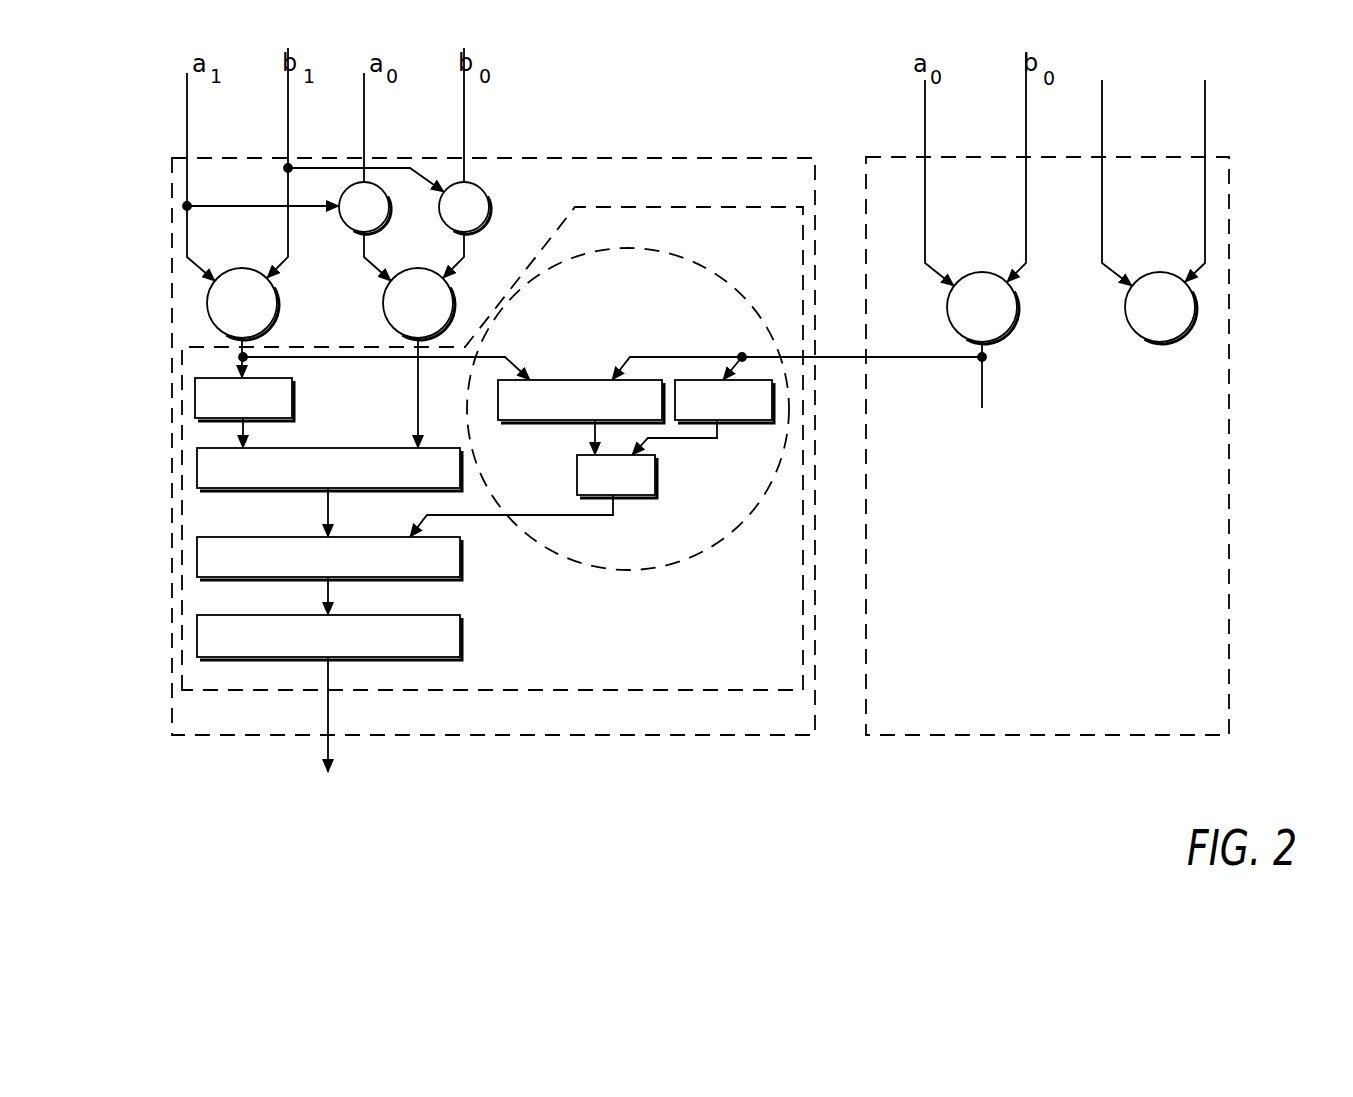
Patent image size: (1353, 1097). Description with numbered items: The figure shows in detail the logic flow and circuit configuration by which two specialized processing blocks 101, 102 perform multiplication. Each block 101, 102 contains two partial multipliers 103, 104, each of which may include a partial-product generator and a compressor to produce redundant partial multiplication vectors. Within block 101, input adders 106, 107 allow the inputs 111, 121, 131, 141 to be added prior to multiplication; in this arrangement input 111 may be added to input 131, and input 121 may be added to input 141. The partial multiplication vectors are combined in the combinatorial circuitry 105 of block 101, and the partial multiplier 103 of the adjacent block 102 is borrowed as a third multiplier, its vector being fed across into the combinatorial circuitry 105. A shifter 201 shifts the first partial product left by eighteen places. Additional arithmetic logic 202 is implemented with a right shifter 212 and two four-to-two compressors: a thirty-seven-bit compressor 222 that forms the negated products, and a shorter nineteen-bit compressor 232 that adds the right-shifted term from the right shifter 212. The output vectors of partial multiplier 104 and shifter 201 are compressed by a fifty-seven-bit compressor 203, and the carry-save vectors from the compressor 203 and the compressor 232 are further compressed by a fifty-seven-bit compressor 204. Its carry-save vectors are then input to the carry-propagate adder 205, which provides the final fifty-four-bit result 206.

The specialized processing block 101 is at (655, 158).
The specialized processing block 102 is at (1215, 157).
The partial multiplier 103 is at (277, 304).
The partial multiplier 104 is at (450, 292).
The combinatorial circuitry 105 is at (502, 693).
The input adder 106 is at (372, 228).
The input adder 107 is at (488, 212).
The input 111 is at (187, 108).
The input 121 is at (288, 125).
The input 131 is at (364, 108).
The input 141 is at (464, 128).
The shifter 201 is at (292, 392).
The arithmetic logic 202 is at (705, 268).
The 4-2 compressor 203 is at (305, 447).
The 4-2 compressor 204 is at (220, 535).
The carry-propagate adder 205 is at (225, 615).
The result 206 is at (330, 745).
The right shifter 212 is at (727, 420).
The 4-2 compressor 222 is at (520, 420).
The 4-2 compressor 232 is at (632, 495).